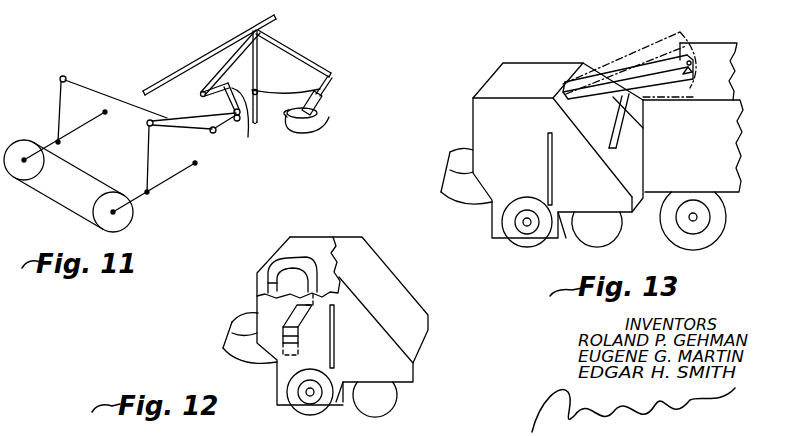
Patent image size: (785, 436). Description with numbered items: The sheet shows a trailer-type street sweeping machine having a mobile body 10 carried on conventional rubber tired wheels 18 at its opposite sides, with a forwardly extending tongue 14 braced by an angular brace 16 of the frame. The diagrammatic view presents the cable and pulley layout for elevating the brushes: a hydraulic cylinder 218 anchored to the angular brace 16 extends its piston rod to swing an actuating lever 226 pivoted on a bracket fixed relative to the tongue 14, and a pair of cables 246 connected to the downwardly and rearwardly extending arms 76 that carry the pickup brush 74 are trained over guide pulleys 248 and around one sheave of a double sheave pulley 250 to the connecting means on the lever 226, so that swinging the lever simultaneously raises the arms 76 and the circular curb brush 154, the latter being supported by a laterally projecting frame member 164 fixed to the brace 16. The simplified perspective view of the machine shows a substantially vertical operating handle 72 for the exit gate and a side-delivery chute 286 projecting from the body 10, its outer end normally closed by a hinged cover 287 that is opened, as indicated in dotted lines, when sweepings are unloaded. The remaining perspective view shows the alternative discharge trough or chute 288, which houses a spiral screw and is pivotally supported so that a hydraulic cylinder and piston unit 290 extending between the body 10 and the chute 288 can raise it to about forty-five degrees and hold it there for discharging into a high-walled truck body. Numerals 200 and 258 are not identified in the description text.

In FIG. 12, the mobile body 10 is at (390, 265).
In FIG. 13, the mobile body 10 is at (492, 77).
In FIG. 11, the tongue 14 is at (236, 30).
In FIG. 11, the angular brace 16 is at (259, 70).
In FIG. 12, the motor vehicle wheels 18 is at (285, 392).
In FIG. 13, the motor vehicle wheels 18 is at (514, 240).
In FIG. 12, the operating handle 72 is at (339, 316).
In FIG. 13, the operating handle 72 is at (547, 181).
In FIG. 11, the pickup brush 74 is at (62, 205).
In FIG. 12, the pickup brush 74 is at (398, 396).
In FIG. 13, the pickup brush 74 is at (615, 229).
In FIG. 11, the arms 76 is at (48, 135).
In FIG. 11, the curb brush 154 is at (322, 126).
In FIG. 12, the curb brush 154 is at (230, 352).
In FIG. 13, the curb brush 154 is at (452, 180).
In FIG. 11, the frame member 164 is at (312, 68).
In FIG. 11, the cylinder 200 is at (322, 91).
In FIG. 11, the hydraulic cylinder 218 is at (243, 121).
In FIG. 11, the actuating lever 226 is at (216, 76).
In FIG. 11, the cables 246 is at (114, 94).
In FIG. 11, the guide pulleys 248 is at (64, 76).
In FIG. 11, the double sheave pulley 250 is at (238, 134).
In FIG. 11, the member 258 is at (368, 5).
In FIG. 12, the side-delivery chute 286 is at (305, 328).
In FIG. 12, the hinged cover 287 is at (287, 330).
In FIG. 13, the discharge chute 288 is at (680, 40).
In FIG. 13, the hydraulic cylinder and piston unit 290 is at (632, 104).